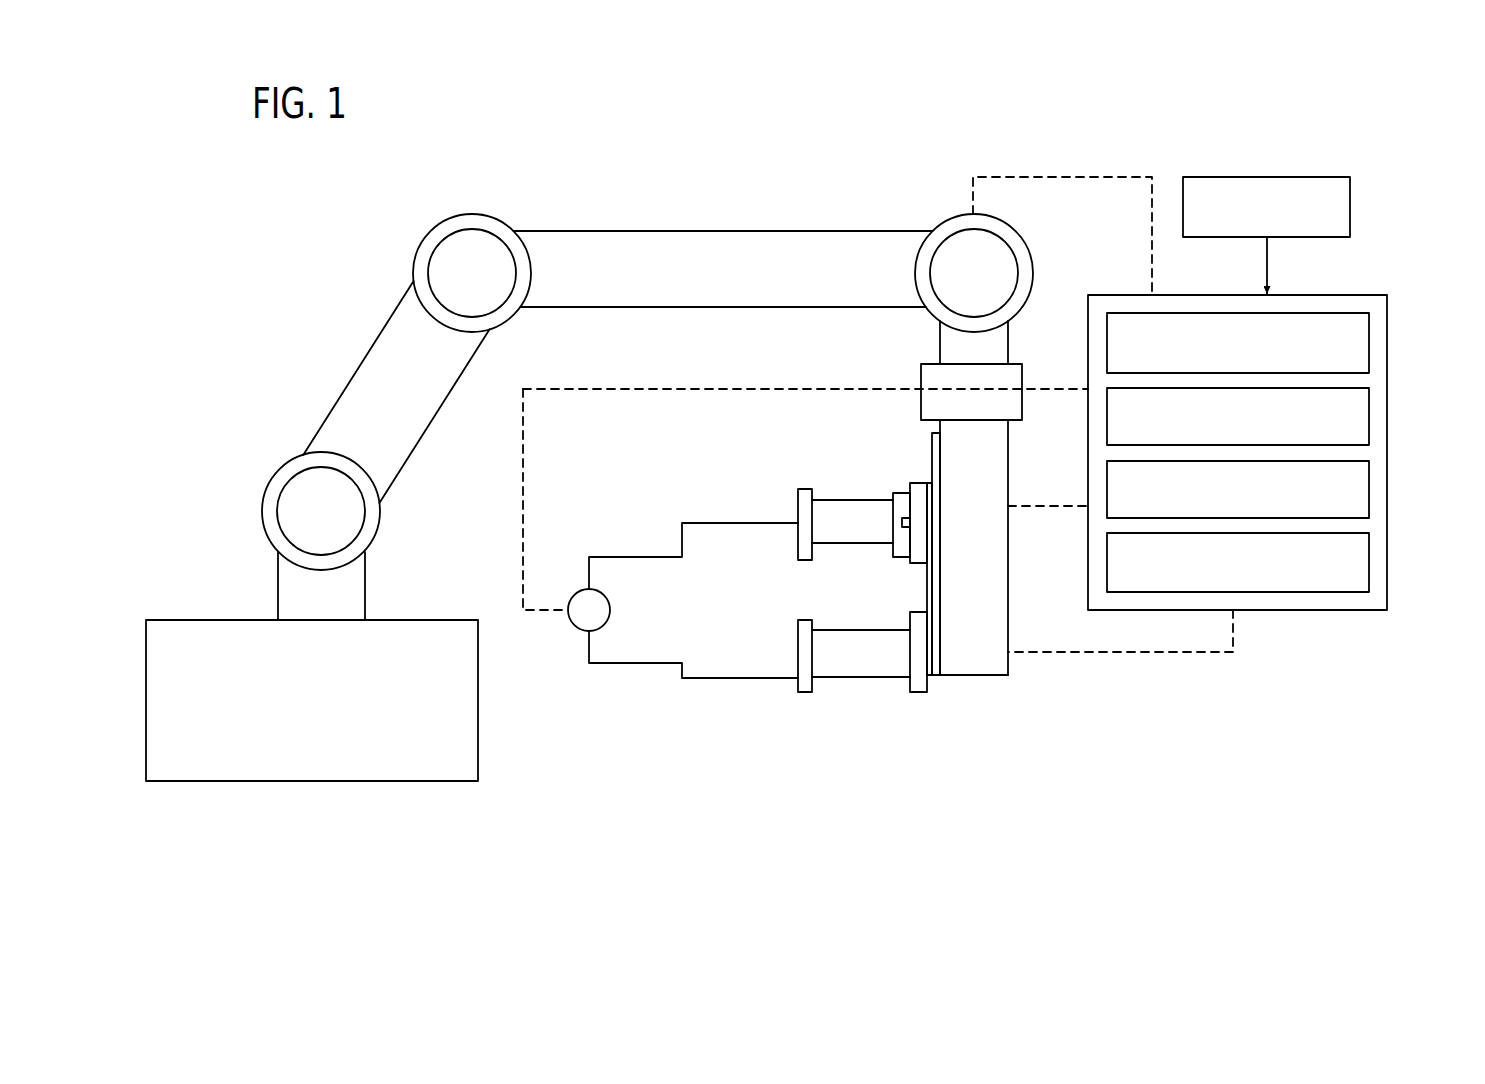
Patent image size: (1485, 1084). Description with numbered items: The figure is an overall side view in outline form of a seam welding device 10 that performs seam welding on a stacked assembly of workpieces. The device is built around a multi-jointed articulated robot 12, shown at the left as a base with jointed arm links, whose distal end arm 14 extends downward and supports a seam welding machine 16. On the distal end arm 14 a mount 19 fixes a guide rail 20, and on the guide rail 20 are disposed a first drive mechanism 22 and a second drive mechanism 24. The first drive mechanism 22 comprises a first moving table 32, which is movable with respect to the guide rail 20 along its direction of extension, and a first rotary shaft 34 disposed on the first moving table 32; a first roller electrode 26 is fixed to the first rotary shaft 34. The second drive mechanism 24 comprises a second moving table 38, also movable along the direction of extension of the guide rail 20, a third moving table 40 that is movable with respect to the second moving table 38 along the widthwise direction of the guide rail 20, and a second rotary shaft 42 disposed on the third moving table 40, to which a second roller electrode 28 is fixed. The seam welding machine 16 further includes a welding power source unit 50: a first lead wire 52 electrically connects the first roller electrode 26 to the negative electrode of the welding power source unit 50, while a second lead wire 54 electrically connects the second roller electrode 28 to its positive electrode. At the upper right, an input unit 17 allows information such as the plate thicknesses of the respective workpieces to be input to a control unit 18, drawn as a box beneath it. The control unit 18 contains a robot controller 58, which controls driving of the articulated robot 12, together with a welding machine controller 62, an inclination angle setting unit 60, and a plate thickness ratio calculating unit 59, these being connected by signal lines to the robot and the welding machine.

The seam welding device 10 is at (843, 156).
The articulated robot 12 is at (537, 229).
The distal end arm 14 is at (1009, 458).
The seam welding machine 16 is at (929, 552).
The input unit 17 is at (1212, 177).
The control unit 18 is at (1264, 434).
The mount 19 is at (937, 520).
The guide rail 20 is at (927, 577).
The first drive mechanism 22 is at (861, 697).
The second drive mechanism 24 is at (853, 499).
The first roller electrode 26 is at (805, 692).
The second roller electrode 28 is at (802, 489).
The first moving table 32 is at (920, 692).
The first rotary shaft 34 is at (859, 670).
The second moving table 38 is at (920, 484).
The third moving table 40 is at (892, 496).
The second rotary shaft 42 is at (858, 534).
The welding power source unit 50 is at (611, 612).
The first lead wire 52 is at (707, 680).
The second lead wire 54 is at (745, 522).
The robot controller 58 is at (1370, 337).
The plate thickness ratio calculating unit 59 is at (1370, 557).
The inclination angle setting unit 60 is at (1370, 483).
The welding machine controller 62 is at (1370, 400).